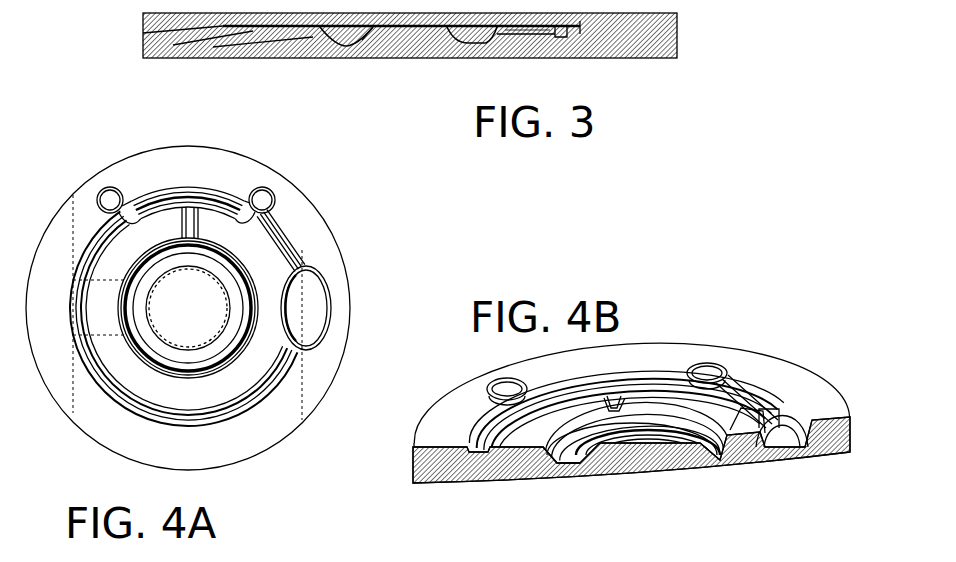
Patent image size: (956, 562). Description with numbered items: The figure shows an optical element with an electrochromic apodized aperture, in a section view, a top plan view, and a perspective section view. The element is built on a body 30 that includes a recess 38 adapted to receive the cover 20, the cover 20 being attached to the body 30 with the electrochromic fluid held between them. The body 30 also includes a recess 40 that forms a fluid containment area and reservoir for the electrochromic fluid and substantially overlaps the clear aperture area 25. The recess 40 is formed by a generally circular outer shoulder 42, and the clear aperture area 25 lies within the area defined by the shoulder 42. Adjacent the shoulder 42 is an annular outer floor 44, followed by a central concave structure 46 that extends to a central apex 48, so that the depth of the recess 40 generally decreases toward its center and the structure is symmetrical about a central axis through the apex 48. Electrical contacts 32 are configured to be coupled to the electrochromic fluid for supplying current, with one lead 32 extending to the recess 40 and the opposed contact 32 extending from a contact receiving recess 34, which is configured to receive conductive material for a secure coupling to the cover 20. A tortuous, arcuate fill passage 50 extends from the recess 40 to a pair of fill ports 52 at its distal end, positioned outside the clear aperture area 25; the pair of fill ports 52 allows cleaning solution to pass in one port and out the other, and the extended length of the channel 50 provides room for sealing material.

In FIG. 3, the cover 20 is at (577, 30).
In FIG. 4A, the clear aperture area 25 is at (140, 378).
In FIG. 3, the body 30 is at (640, 58).
In FIG. 4A, the body 30 is at (227, 455).
In FIG. 4A, the electrical contact 32 is at (315, 390).
In FIG. 4B, the electrical contact 32 is at (433, 403).
In FIG. 3, the contact receiving recess 34 is at (553, 44).
In FIG. 4A, the contact receiving recess 34 is at (305, 270).
In FIG. 4B, the contact receiving recess 34 is at (788, 440).
In FIG. 3, the recess 38 is at (143, 36).
In FIG. 4B, the recess 38 is at (742, 395).
In FIG. 3, the recess 40 is at (310, 54).
In FIG. 3, the outer shoulder 42 is at (220, 58).
In FIG. 4A, the outer shoulder 42 is at (200, 362).
In FIG. 4B, the outer shoulder 42 is at (734, 450).
In FIG. 3, the annular outer floor 44 is at (330, 47).
In FIG. 4A, the annular outer floor 44 is at (186, 430).
In FIG. 4B, the annular outer floor 44 is at (560, 463).
In FIG. 3, the central concave structure 46 is at (447, 55).
In FIG. 4A, the central concave structure 46 is at (160, 340).
In FIG. 4B, the central concave structure 46 is at (593, 470).
In FIG. 3, the central apex 48 is at (393, 55).
In FIG. 4A, the central apex 48 is at (207, 292).
In FIG. 4B, the central apex 48 is at (648, 455).
In FIG. 4A, the fill passage 50 is at (143, 203).
In FIG. 4B, the fill passage 50 is at (557, 400).
In FIG. 4A, the fill port 52 is at (100, 195).
In FIG. 4B, the fill port 52 is at (490, 382).